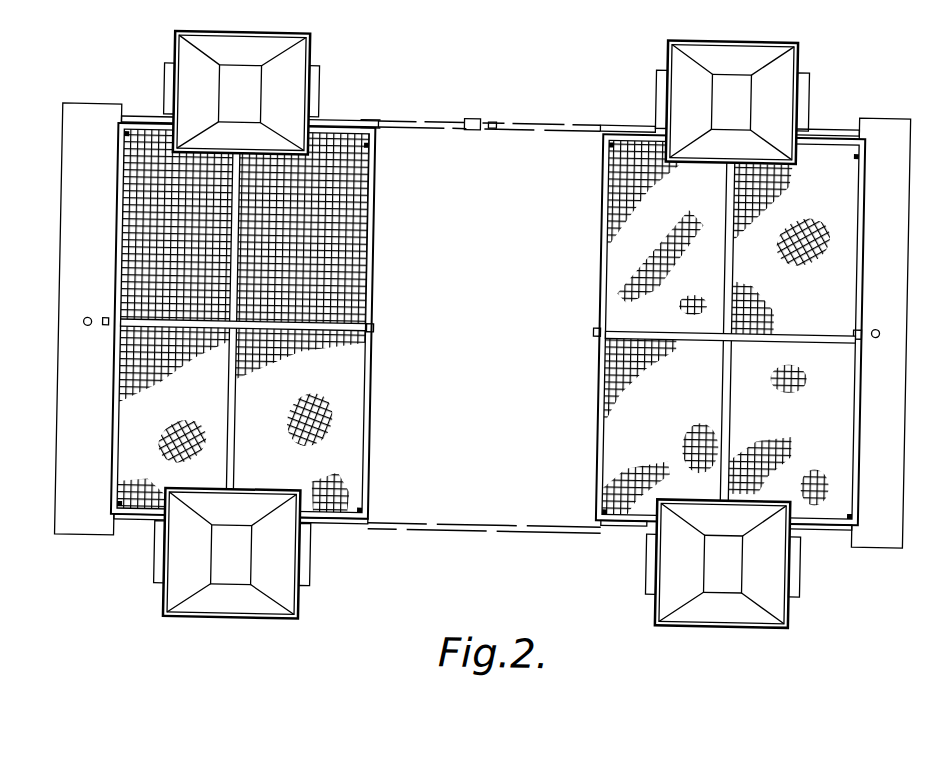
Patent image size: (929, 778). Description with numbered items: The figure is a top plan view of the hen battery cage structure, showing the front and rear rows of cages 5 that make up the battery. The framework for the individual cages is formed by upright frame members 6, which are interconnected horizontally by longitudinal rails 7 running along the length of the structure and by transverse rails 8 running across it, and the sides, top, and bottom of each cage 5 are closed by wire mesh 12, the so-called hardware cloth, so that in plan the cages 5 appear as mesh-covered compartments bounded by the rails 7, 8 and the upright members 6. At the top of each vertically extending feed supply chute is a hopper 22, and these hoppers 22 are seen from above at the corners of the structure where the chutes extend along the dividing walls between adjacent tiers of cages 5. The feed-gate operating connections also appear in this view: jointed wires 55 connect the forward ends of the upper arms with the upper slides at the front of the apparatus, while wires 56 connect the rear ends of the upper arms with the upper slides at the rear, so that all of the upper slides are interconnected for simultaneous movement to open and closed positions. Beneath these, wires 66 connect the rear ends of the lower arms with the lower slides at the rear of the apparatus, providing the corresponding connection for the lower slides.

The cage 5 is at (120, 229).
The upright frame member 6 is at (118, 140).
The longitudinal rail 7 is at (143, 527).
The transverse rail 8 is at (116, 385).
The wire mesh 12 is at (120, 287).
The hopper 22 is at (233, 52).
The jointed wire 55 is at (418, 530).
The wire 56 is at (364, 127).
The wire 66 is at (418, 126).